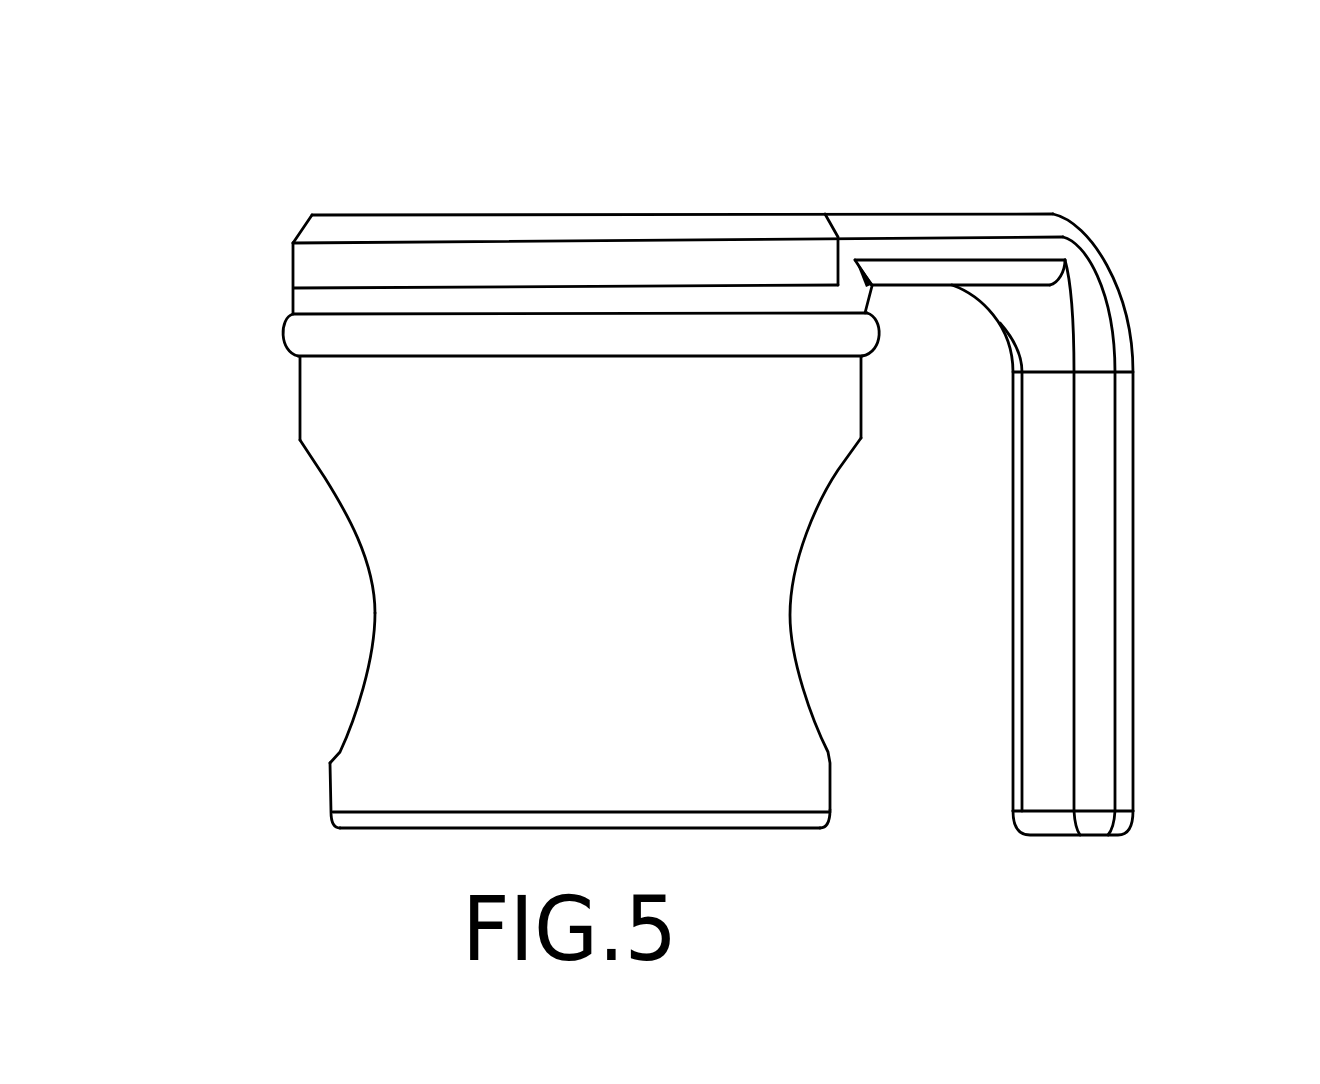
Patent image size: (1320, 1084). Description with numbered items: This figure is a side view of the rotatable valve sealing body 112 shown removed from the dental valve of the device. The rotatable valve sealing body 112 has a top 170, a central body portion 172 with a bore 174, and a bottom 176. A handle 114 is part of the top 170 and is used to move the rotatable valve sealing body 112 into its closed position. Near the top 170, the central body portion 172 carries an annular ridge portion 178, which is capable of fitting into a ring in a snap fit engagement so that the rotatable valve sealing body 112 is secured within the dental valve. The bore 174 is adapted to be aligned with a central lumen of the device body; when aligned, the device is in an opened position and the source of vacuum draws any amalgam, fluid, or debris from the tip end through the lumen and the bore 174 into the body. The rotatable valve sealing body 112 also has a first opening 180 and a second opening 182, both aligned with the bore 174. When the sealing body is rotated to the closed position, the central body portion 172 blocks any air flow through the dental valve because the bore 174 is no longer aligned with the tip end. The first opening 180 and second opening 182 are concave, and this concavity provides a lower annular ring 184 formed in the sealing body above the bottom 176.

The rotatable valve sealing body 112 is at (581, 165).
The handle 114 is at (1095, 410).
The top 170 is at (397, 213).
The central body portion 172 is at (373, 432).
The bore 174 is at (348, 577).
The bottom 176 is at (770, 830).
The annular ridge portion 178 is at (297, 332).
The first opening 180 is at (365, 683).
The second opening 182 is at (792, 633).
The lower annular ring 184 is at (330, 786).